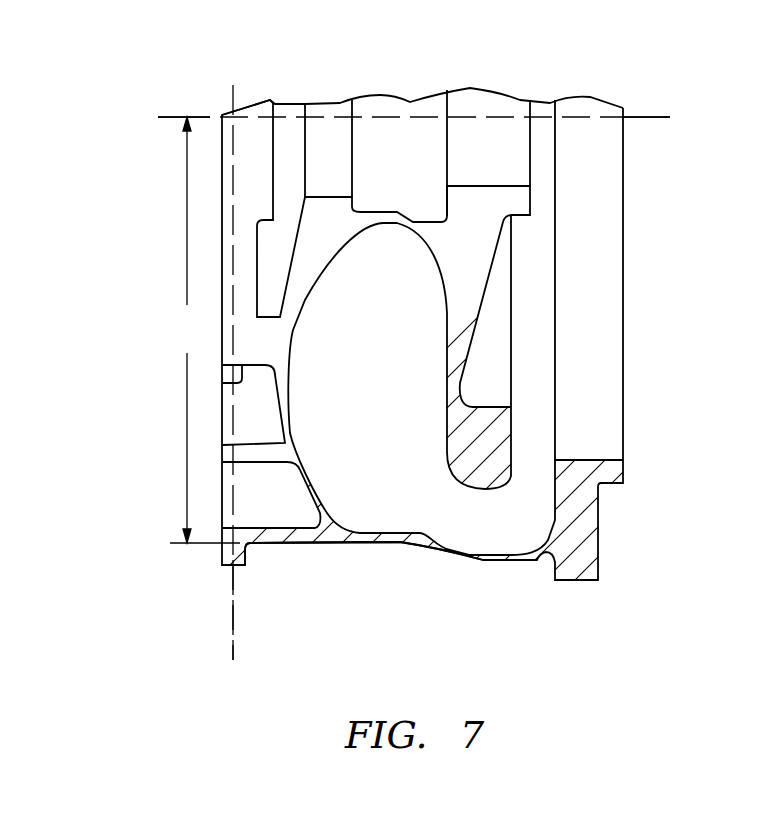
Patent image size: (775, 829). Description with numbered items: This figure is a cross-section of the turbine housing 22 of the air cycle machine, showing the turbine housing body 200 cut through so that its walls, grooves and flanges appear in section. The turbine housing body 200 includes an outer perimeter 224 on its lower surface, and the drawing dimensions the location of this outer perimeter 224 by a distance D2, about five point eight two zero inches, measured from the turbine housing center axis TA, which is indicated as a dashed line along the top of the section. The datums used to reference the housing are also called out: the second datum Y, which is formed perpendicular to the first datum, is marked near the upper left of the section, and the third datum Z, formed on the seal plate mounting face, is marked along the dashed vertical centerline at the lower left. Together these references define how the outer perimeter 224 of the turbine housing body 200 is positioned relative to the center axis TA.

The turbine housing 22 is at (573, 610).
The turbine housing body 200 is at (278, 540).
The outer perimeter 224 is at (378, 545).
The turbine housing center axis TA is at (650, 117).
The second datum Y is at (163, 117).
The third datum Z is at (232, 645).
The distance D2 is at (205, 330).